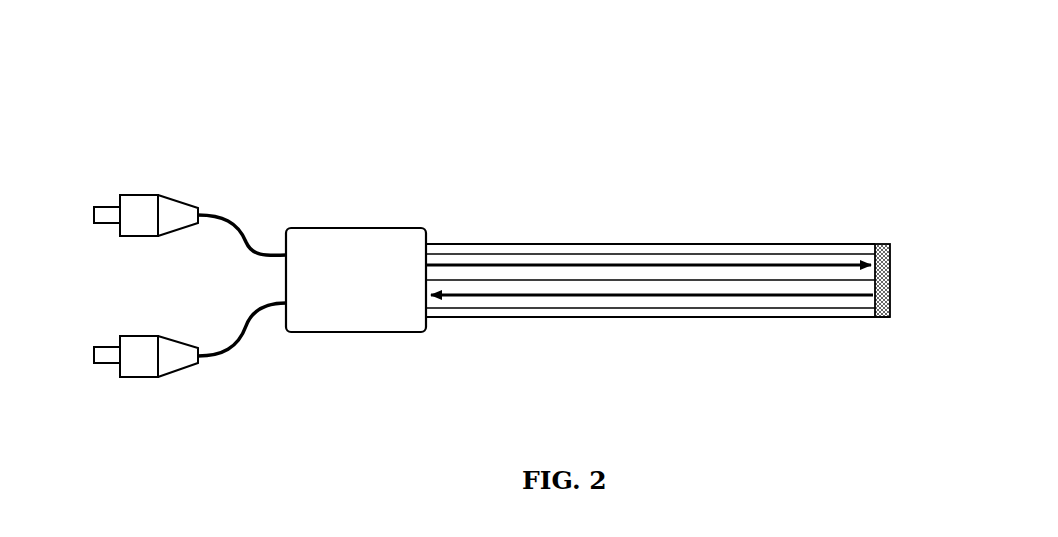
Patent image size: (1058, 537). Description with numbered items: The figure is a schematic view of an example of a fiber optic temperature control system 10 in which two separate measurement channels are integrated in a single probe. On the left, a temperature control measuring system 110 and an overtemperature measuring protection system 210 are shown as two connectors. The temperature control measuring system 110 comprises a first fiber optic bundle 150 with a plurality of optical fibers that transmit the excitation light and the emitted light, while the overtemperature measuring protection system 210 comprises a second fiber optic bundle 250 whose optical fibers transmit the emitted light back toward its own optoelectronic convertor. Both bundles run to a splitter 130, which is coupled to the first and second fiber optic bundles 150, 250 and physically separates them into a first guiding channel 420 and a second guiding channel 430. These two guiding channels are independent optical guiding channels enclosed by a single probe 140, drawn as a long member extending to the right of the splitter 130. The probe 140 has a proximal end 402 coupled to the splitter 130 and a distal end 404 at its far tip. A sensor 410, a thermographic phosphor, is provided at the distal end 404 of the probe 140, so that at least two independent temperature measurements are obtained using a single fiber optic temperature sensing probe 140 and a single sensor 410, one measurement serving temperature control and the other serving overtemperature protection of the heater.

The fiber optic temperature control system 10 is at (886, 58).
The temperature control measuring system 110 is at (139, 205).
The overtemperature measuring protection system 210 is at (139, 378).
The first fiber optic bundle 150 is at (228, 211).
The second fiber optic bundle 250 is at (232, 355).
The splitter 130 is at (375, 240).
The single probe 140 is at (651, 238).
The proximal end 402 is at (436, 329).
The distal end 404 is at (876, 325).
The sensor 410 is at (882, 245).
The first guiding channel 420 is at (797, 251).
The second guiding channel 430 is at (700, 290).